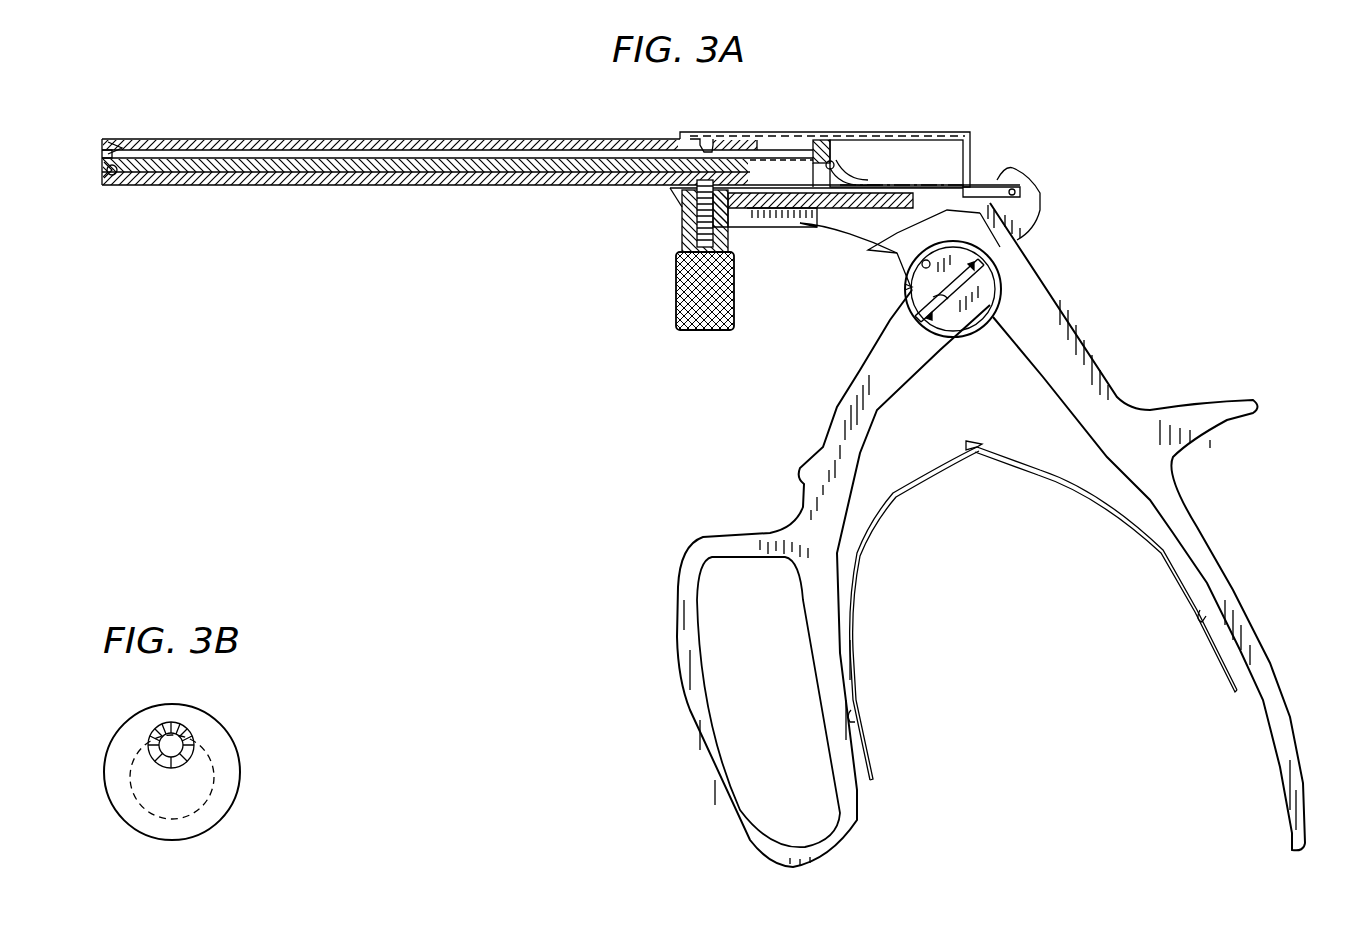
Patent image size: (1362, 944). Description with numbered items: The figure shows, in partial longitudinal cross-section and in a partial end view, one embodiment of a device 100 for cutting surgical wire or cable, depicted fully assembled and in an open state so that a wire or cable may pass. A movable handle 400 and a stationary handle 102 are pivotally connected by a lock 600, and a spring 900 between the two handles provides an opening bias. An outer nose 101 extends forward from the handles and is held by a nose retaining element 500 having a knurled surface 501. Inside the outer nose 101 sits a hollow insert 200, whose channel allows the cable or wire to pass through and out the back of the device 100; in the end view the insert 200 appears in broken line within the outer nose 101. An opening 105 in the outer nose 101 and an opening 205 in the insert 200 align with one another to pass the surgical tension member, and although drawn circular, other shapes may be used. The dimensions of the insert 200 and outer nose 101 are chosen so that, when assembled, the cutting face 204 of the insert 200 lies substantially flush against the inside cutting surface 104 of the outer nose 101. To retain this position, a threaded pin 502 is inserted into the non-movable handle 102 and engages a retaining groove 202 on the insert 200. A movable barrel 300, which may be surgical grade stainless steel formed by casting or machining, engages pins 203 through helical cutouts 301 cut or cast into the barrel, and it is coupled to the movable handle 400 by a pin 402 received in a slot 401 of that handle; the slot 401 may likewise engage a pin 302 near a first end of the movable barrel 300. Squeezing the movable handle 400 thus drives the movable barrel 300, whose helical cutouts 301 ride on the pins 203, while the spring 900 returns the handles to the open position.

In FIG. 3A, the device 100 is at (1128, 126).
In FIG. 3A, the outer nose 101 is at (215, 139).
In FIG. 3B, the outer nose 101 is at (118, 728).
In FIG. 3A, the stationary handle 102 is at (1200, 530).
In FIG. 3A, the inside cutting surface 104 is at (112, 172).
In FIG. 3A, the opening 105 is at (102, 150).
In FIG. 3B, the opening 105 is at (155, 730).
In FIG. 3A, the insert 200 is at (745, 132).
In FIG. 3B, the insert 200 is at (222, 740).
In FIG. 3A, the retaining groove 202 is at (703, 140).
In FIG. 3A, the pin 203 is at (830, 160).
In FIG. 3A, the cutting face 204 is at (104, 170).
In FIG. 3A, the opening 205 is at (122, 148).
In FIG. 3B, the opening 205 is at (186, 735).
In FIG. 3A, the movable barrel 300 is at (930, 150).
In FIG. 3A, the helical cutouts 301 is at (858, 172).
In FIG. 3A, the pin 302 is at (1010, 188).
In FIG. 3A, the movable handle 400 is at (685, 705).
In FIG. 3A, the slot 401 is at (1020, 170).
In FIG. 3A, the pin 402 is at (925, 288).
In FIG. 3A, the nose retaining element 500 is at (703, 333).
In FIG. 3A, the knurled surface 501 is at (695, 280).
In FIG. 3A, the threaded pin 502 is at (697, 212).
In FIG. 3A, the lock 600 is at (970, 334).
In FIG. 3A, the spring 900 is at (996, 455).